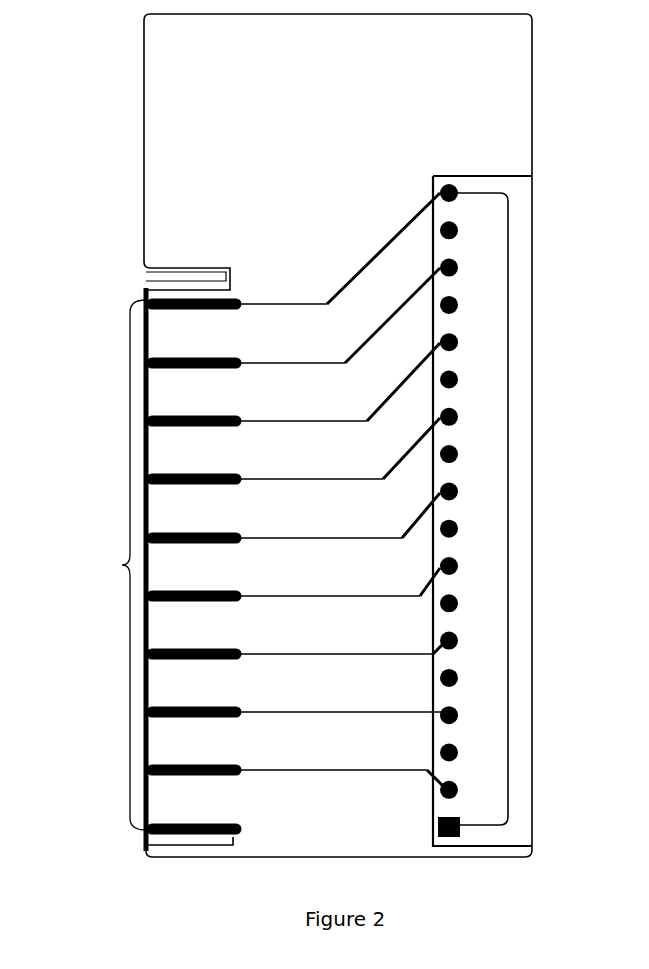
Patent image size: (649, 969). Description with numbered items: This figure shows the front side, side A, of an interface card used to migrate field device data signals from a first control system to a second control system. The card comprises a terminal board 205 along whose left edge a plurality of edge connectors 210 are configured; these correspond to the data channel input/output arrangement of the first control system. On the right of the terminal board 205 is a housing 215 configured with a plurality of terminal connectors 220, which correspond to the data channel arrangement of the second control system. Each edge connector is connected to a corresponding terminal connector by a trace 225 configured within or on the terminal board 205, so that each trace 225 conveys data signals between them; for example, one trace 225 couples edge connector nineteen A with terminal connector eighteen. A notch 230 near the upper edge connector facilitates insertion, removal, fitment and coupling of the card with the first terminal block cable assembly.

The terminal board 205 is at (173, 127).
The plurality of edge connectors 210 is at (122, 565).
The housing 215 is at (512, 190).
The plurality of terminal connectors 220 is at (506, 512).
The trace 225 is at (387, 253).
The notch 230 is at (150, 277).